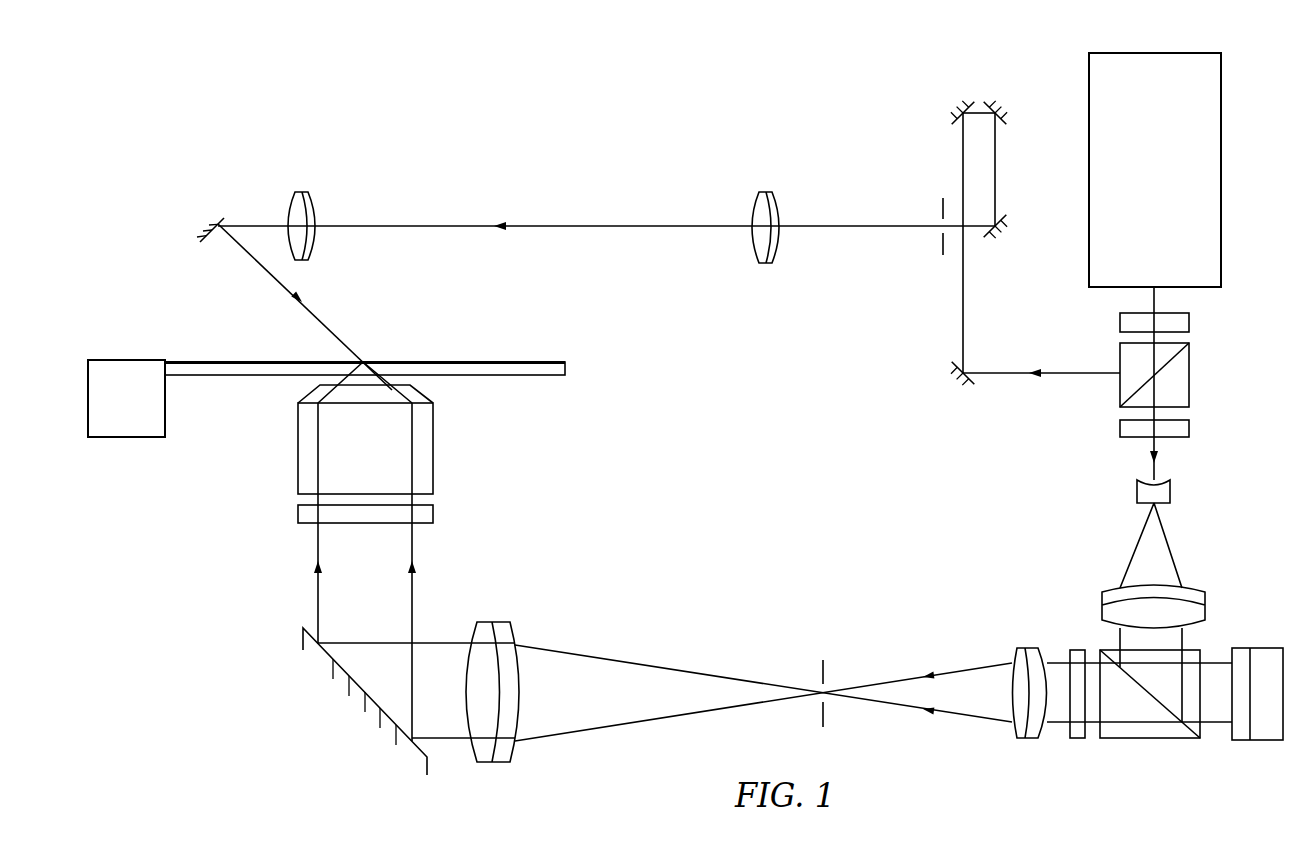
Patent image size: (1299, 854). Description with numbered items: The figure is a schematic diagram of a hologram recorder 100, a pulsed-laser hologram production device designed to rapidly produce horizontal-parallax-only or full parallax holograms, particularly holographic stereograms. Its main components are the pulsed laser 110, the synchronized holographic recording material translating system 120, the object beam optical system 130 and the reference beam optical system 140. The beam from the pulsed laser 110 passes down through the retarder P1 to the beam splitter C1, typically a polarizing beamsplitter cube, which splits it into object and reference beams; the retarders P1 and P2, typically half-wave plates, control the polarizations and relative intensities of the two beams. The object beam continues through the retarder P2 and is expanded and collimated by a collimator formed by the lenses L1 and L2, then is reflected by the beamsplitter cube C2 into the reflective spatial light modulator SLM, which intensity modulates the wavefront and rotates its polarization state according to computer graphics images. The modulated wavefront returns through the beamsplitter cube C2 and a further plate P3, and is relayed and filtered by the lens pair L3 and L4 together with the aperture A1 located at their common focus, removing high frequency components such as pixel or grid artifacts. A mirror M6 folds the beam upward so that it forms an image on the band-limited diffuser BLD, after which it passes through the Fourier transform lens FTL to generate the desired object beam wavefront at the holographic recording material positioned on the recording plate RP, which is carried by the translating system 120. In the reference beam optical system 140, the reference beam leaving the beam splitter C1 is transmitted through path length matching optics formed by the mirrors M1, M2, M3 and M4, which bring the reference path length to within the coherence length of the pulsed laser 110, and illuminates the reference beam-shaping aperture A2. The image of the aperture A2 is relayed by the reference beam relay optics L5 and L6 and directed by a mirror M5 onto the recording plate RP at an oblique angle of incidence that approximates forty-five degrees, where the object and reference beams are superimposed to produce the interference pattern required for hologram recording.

The hologram recorder 100 is at (292, 734).
The pulsed laser 110 is at (1143, 240).
The synchronized holographic recording material translating system 120 is at (112, 412).
The object beam optical system 130 is at (1256, 339).
The reference beam optical system 140 is at (660, 162).
The retarder P1 is at (1168, 322).
The beam splitter C1 is at (1168, 375).
The retarder P2 is at (1168, 428).
The lens L1 is at (1168, 492).
The lens L2 is at (1167, 606).
The beamsplitter cube C2 is at (1150, 711).
The spatial light modulator SLM is at (1257, 710).
The polarizer P3 is at (1078, 711).
The lens L3 is at (1030, 679).
The aperture A1 is at (823, 679).
The lens L4 is at (492, 678).
The mirror M6 is at (365, 701).
The band-limited diffuser BLD is at (387, 517).
The Fourier transform lens FTL is at (386, 428).
The recording plate RP is at (381, 370).
The mirror M5 is at (200, 226).
The reference beam relay optics L6 is at (301, 212).
The reference beam relay optics L5 is at (765, 213).
The reference beam-shaping aperture A2 is at (944, 244).
The mirror M2 is at (955, 102).
The mirror M3 is at (1005, 102).
The mirror M4 is at (1001, 239).
The mirror M1 is at (959, 389).